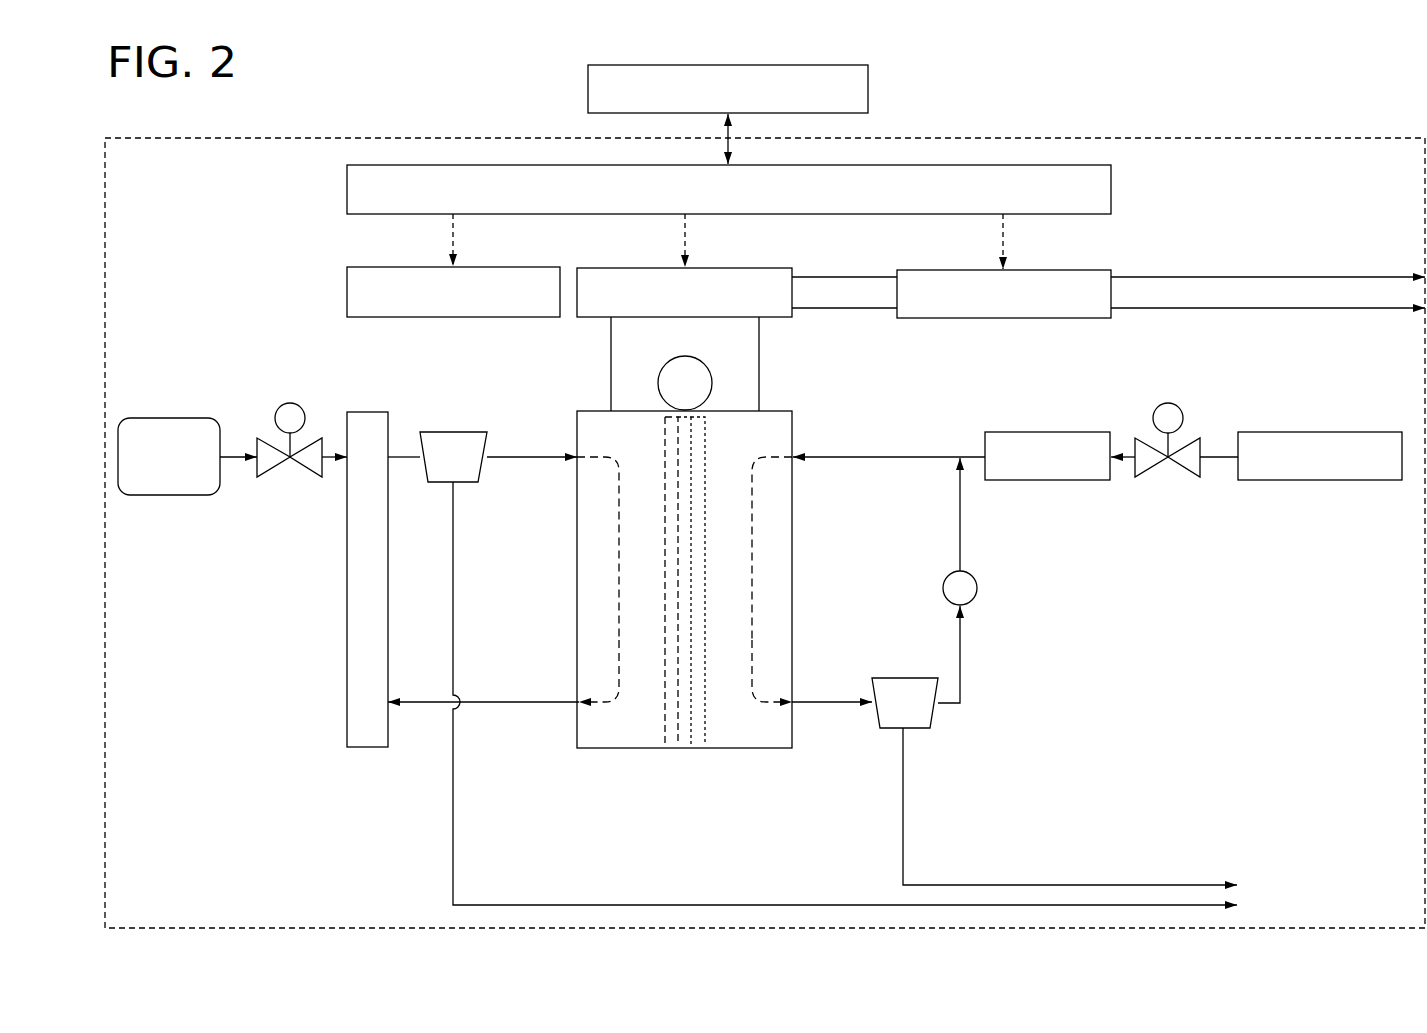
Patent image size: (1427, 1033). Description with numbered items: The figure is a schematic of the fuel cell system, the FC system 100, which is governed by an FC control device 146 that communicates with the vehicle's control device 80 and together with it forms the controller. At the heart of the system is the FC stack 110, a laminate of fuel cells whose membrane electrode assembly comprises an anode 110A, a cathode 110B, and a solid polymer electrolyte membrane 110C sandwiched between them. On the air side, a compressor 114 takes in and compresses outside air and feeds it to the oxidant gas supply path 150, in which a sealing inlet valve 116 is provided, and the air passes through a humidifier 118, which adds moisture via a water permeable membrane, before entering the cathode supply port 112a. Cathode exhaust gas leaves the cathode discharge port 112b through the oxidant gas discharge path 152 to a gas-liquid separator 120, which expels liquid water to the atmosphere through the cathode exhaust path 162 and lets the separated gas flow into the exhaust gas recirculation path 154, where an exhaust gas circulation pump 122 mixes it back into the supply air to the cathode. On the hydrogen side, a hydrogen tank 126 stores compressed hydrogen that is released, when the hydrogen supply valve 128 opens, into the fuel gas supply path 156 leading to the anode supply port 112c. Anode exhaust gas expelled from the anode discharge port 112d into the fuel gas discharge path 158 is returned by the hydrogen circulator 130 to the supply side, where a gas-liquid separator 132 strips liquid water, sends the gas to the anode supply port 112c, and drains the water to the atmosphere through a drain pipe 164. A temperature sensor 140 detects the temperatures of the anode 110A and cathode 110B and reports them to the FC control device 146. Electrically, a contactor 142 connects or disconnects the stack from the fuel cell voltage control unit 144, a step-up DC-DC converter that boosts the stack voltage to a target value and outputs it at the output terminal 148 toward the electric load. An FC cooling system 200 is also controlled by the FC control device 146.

The control device 80 is at (870, 92).
The FC system 100 is at (1350, 138).
The FC control device 146 is at (1113, 188).
The FC cooling system 200 is at (495, 267).
The contactor 142 is at (730, 268).
The fuel cell voltage control unit (FCVCU) 144 is at (1050, 270).
The output terminal 148 is at (1420, 277).
The temperature sensor (VFT) 140 is at (692, 358).
The FC stack 110 is at (802, 627).
The anode 110A is at (665, 746).
The solid polymer electrolyte membrane 110C is at (683, 746).
The cathode 110B is at (702, 746).
The cathode supply port 112a is at (794, 455).
The cathode discharge port 112b is at (794, 702).
The anode supply port 112c is at (575, 455).
The anode discharge port 112d is at (577, 701).
The hydrogen tank 126 is at (155, 418).
The hydrogen supply valve 128 is at (306, 466).
The hydrogen circulator 130 is at (368, 412).
The gas-liquid separator 132 is at (440, 482).
The fuel gas supply path 156 is at (233, 458).
The fuel gas discharge path 158 is at (423, 704).
The drain pipe 164 is at (538, 904).
The oxidant gas discharge path 152 is at (826, 704).
The gas-liquid separator 120 is at (905, 678).
The exhaust gas recirculation path 154 is at (962, 658).
The exhaust gas circulation pump (P) 122 is at (978, 588).
The cathode exhaust path 162 is at (1070, 885).
The humidifier 118 is at (1045, 432).
The sealing inlet valve 116 is at (1187, 470).
The oxidant gas supply path 150 is at (1218, 455).
The compressor 114 is at (1340, 432).